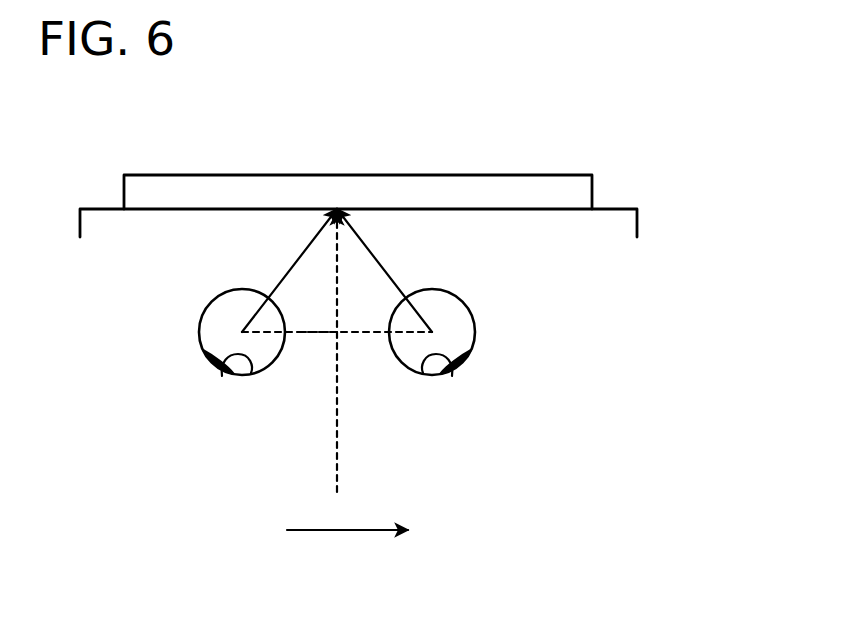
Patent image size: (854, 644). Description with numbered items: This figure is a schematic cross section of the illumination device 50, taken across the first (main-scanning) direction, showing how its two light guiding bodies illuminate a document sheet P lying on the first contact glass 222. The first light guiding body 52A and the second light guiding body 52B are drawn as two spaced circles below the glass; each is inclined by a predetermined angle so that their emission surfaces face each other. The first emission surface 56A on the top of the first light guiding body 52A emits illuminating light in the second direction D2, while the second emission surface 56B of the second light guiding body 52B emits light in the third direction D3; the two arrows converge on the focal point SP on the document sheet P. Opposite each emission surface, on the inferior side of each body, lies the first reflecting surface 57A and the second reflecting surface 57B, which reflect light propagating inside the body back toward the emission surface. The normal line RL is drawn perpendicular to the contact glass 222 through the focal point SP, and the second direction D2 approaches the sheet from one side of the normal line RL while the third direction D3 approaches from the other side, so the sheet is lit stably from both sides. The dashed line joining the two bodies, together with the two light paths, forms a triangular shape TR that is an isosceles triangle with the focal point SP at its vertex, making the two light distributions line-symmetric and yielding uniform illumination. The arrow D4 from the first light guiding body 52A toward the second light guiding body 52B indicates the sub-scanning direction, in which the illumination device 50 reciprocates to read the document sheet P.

The illumination device 50 is at (128, 442).
The document sheet P is at (561, 185).
The first contact glass 222 is at (619, 213).
The focal point SP is at (334, 205).
The second direction D2 is at (298, 258).
The third direction D3 is at (376, 258).
The normal line RL is at (340, 478).
The triangular shape TR is at (316, 334).
The first emission surface 56A is at (262, 290).
The second emission surface 56B is at (412, 290).
The first light guiding body 52A is at (198, 331).
The second light guiding body 52B is at (476, 331).
The first reflecting surface 57A is at (251, 373).
The second reflecting surface 57B is at (423, 373).
The sub-scanning direction D4 is at (345, 532).